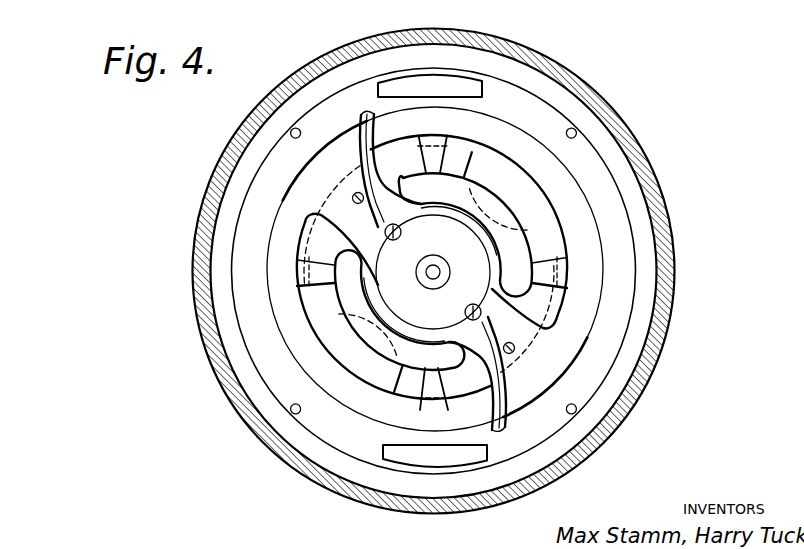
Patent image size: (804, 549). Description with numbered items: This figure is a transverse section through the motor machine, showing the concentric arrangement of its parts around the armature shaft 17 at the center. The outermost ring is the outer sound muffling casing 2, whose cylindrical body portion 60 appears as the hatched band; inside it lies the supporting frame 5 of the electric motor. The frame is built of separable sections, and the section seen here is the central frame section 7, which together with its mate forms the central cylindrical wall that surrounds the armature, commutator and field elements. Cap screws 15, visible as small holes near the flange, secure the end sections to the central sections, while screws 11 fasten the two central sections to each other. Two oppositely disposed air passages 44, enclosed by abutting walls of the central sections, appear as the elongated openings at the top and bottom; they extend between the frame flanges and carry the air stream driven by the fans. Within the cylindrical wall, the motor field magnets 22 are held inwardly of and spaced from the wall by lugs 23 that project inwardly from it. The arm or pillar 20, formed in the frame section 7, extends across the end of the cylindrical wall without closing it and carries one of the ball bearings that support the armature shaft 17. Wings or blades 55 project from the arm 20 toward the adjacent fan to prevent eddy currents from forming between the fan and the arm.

The outer sound muffling casing 2 is at (673, 241).
The supporting frame 5 is at (218, 222).
The central frame section 7 is at (650, 334).
The cylindrical body portion 60 is at (257, 437).
The air passages 44 is at (445, 80).
The cap screws 15 is at (577, 129).
The armature shaft 17 is at (443, 270).
The arm or pillar 20 is at (362, 229).
The field magnets 22 is at (458, 162).
The lugs 23 is at (437, 150).
The wings or blades 55 is at (363, 147).
The screws 11 is at (352, 198).